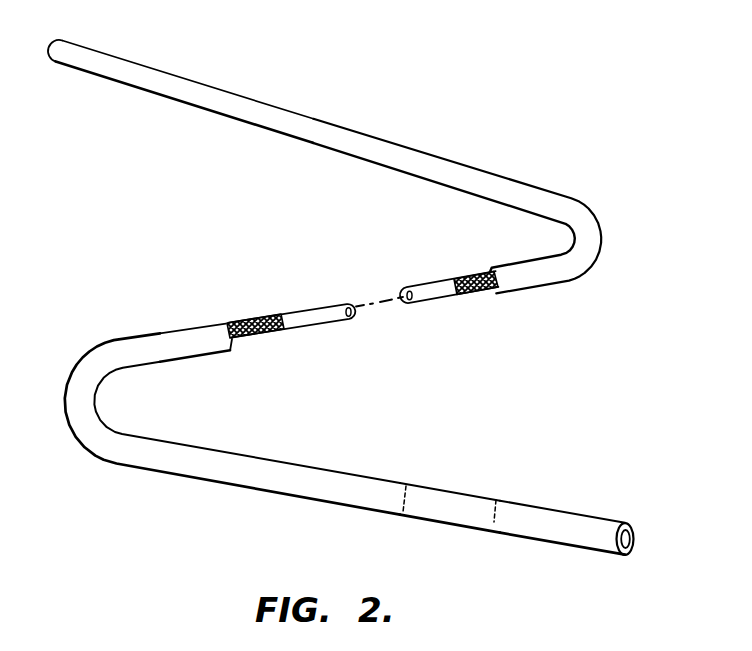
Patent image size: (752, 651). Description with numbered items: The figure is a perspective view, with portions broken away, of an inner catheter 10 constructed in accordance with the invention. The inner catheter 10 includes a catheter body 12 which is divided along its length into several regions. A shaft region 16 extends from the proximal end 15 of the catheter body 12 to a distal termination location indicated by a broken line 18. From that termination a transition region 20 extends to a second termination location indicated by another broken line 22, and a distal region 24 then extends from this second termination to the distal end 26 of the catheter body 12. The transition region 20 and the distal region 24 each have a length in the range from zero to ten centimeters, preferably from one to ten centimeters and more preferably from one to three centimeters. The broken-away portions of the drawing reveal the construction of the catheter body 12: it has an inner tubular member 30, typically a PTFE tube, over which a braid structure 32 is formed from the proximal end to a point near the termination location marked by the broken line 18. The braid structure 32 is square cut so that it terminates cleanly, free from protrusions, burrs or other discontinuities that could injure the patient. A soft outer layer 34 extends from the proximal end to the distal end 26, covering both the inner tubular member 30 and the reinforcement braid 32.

The inner catheter 10 is at (430, 100).
The catheter body 12 is at (460, 167).
The proximal end 15 is at (110, 53).
The shaft region 16 is at (245, 127).
The broken line 18 is at (407, 484).
The transition region 20 is at (450, 519).
The broken line 22 is at (496, 500).
The distal region 24 is at (568, 522).
The distal end 26 is at (625, 556).
The inner tubular member 30 is at (322, 303).
The braid structure 32 is at (250, 322).
The soft outer layer 34 is at (217, 352).